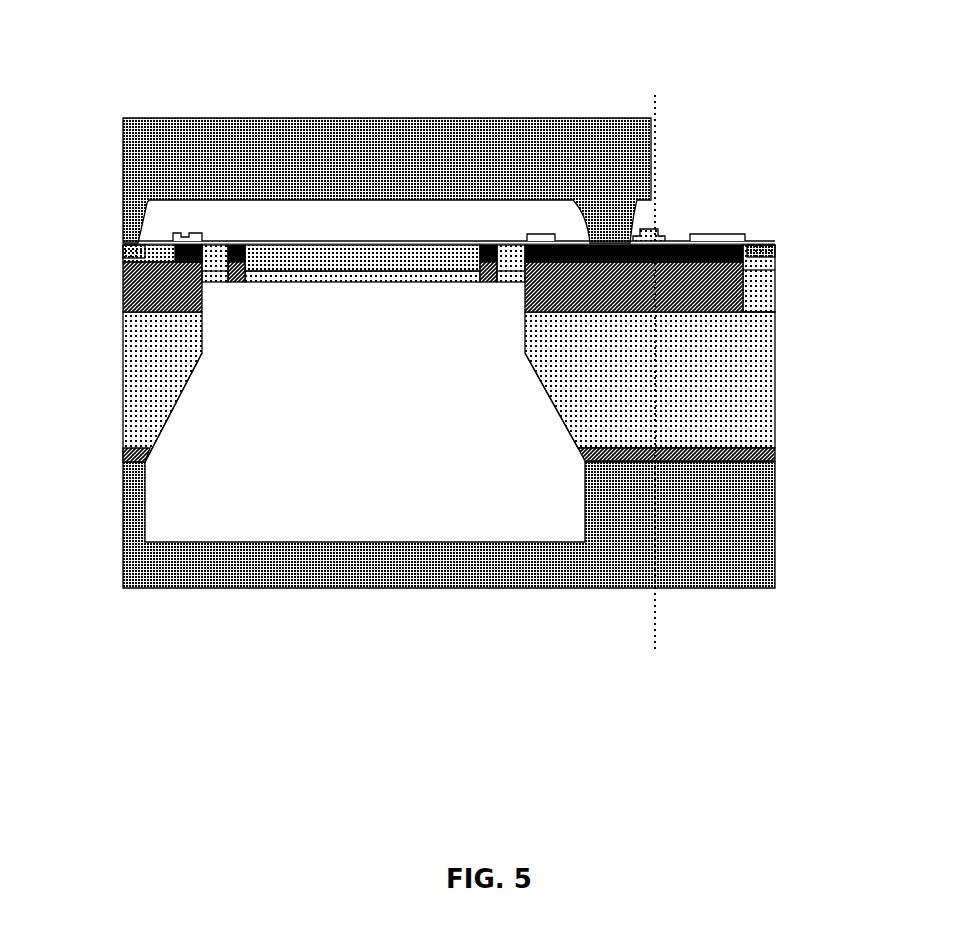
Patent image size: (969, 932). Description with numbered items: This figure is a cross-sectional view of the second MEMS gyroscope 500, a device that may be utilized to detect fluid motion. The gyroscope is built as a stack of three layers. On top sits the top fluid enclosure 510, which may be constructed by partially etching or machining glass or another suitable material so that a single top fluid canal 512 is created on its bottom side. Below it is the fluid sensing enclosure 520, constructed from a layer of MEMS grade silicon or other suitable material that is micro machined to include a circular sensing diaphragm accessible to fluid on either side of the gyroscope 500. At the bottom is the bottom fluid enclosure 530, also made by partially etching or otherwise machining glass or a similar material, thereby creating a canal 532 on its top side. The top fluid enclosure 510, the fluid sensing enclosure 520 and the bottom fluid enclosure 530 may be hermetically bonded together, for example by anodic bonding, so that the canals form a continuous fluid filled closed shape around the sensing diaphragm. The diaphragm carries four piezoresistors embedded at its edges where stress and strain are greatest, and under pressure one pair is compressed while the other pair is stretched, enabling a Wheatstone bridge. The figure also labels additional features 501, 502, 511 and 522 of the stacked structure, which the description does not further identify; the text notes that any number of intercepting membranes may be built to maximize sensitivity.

The second MEMS gyroscope 500 is at (127, 75).
The bond pad 501 is at (137, 247).
The bonding layer 502 is at (123, 455).
The top fluid enclosure 510 is at (116, 102).
The anchor 511 is at (215, 273).
The top fluid canal 512 is at (330, 220).
The fluid sensing enclosure 520 is at (116, 245).
The through opening 522 is at (435, 412).
The bottom fluid enclosure 530 is at (116, 462).
The canal 532 is at (313, 532).